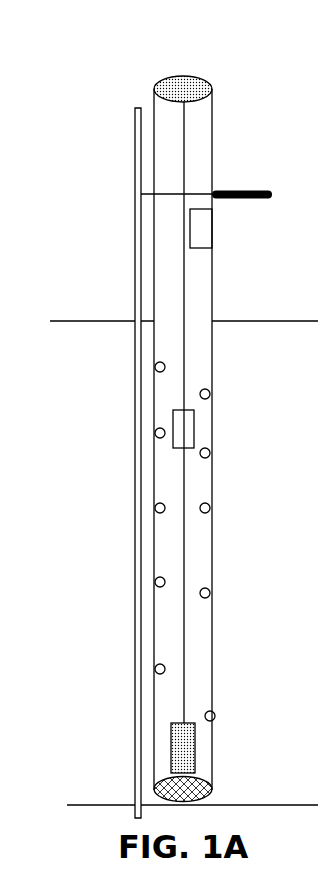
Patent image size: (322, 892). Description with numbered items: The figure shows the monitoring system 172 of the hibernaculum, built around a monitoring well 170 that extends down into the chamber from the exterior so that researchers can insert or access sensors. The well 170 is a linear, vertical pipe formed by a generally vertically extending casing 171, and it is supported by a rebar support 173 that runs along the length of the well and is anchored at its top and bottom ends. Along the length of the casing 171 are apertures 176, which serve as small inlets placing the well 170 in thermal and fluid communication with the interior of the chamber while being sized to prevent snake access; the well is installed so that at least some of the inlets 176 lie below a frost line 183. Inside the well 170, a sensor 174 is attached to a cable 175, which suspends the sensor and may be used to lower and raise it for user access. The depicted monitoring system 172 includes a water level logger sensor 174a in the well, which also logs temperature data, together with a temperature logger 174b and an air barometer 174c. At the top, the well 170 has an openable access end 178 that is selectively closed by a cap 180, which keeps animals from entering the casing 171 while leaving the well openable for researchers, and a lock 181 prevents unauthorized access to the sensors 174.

The monitoring well 170 is at (175, 283).
The casing 171 is at (215, 640).
The monitoring system 172 is at (77, 87).
The rebar support 173 is at (135, 172).
The sensor 174 is at (189, 484).
The water level logger sensor 174a is at (188, 762).
The temperature logger 174b is at (194, 425).
The air barometer 174c is at (200, 249).
The cable 175 is at (187, 538).
The apertures (inlets) 176 is at (156, 364).
The openable access end 178 is at (152, 77).
The cap 180 is at (190, 86).
The lock 181 is at (235, 189).
The frost line 183 is at (242, 320).